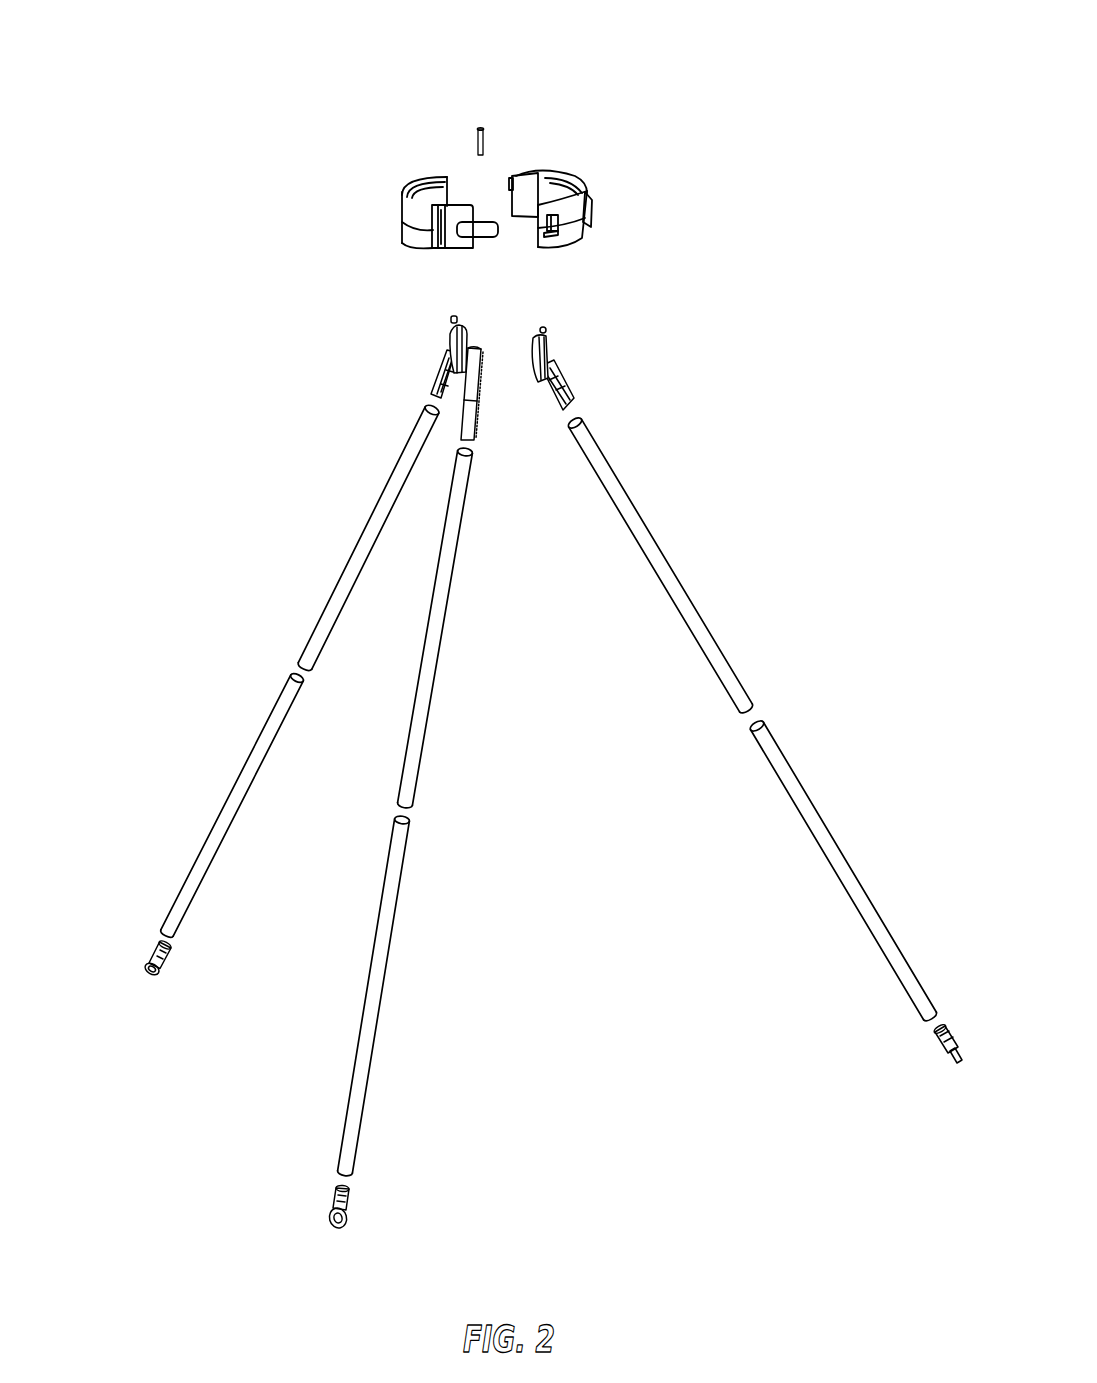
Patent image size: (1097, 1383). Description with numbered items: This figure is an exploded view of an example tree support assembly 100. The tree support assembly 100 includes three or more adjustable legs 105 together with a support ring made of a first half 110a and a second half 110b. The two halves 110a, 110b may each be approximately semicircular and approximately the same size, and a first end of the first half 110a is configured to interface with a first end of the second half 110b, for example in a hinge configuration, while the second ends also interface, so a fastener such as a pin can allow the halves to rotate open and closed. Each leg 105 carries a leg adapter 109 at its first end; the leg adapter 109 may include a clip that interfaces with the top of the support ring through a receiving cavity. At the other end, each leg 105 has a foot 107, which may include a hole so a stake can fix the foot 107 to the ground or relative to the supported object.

The tree support assembly 100 is at (806, 66).
The adjustable legs 105 is at (112, 318).
The feet 107 is at (161, 964).
The leg adapters 109 is at (450, 341).
The first half 110a is at (402, 186).
The second half 110b is at (550, 190).